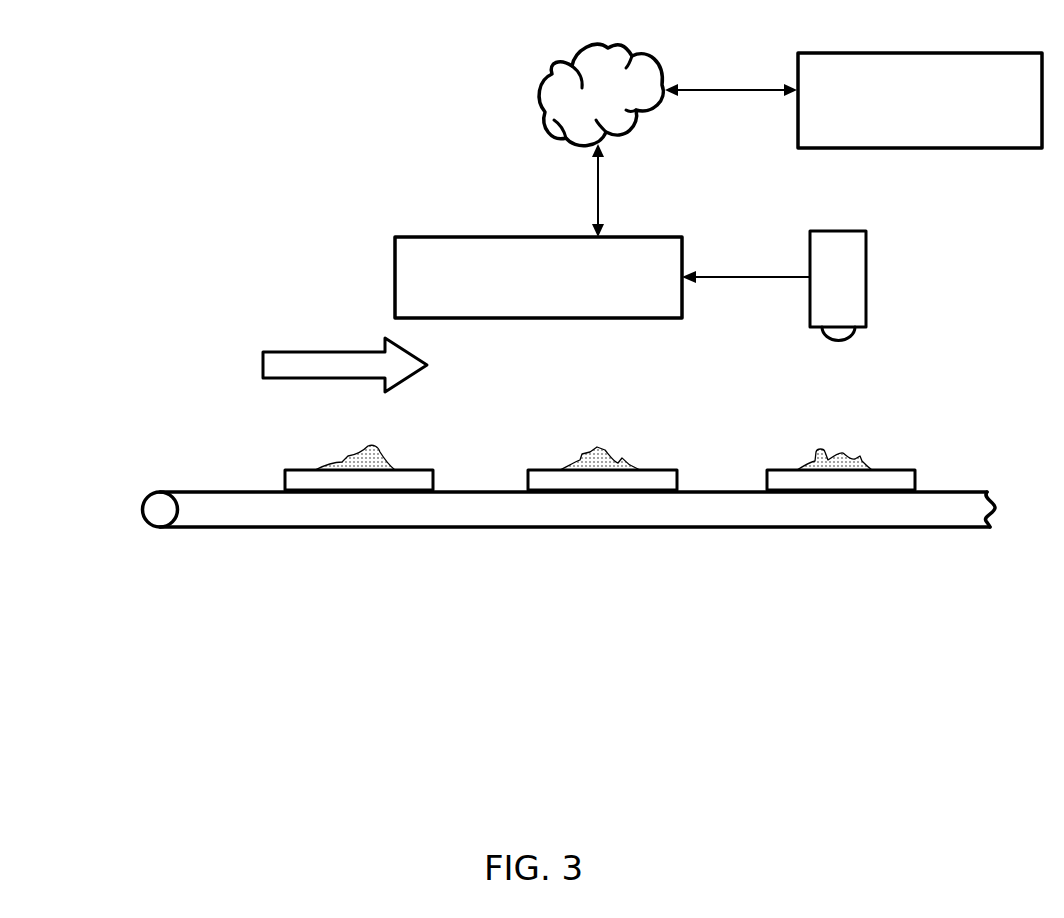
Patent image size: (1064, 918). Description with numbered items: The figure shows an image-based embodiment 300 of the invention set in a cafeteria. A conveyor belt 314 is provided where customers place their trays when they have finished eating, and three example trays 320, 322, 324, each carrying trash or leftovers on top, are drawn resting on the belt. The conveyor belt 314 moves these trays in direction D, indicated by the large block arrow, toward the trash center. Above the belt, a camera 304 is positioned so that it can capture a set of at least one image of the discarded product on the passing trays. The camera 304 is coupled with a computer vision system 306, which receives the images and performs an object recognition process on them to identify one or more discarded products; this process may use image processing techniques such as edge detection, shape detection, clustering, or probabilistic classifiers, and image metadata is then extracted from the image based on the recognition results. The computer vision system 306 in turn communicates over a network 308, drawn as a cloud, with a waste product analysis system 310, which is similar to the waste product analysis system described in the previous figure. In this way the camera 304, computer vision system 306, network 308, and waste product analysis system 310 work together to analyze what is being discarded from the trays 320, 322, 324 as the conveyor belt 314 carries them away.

The image-based embodiment 300 is at (163, 78).
The camera 304 is at (838, 257).
The computer vision system 306 is at (503, 247).
The network 308 is at (563, 82).
The waste product analysis system 310 is at (873, 53).
The conveyor belt 314 is at (205, 493).
The tray 320 is at (295, 470).
The tray 322 is at (538, 470).
The tray 324 is at (780, 470).
The direction D is at (305, 357).